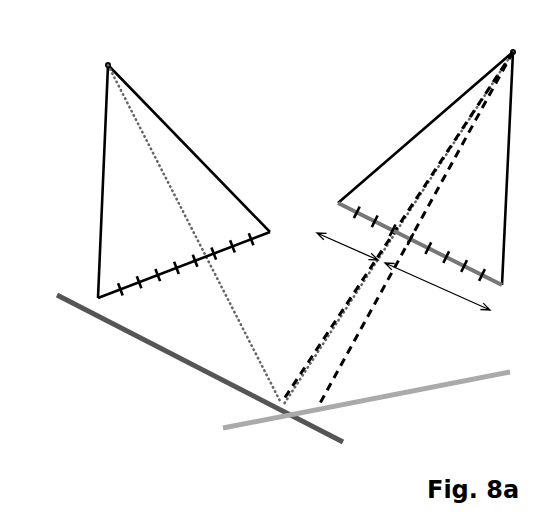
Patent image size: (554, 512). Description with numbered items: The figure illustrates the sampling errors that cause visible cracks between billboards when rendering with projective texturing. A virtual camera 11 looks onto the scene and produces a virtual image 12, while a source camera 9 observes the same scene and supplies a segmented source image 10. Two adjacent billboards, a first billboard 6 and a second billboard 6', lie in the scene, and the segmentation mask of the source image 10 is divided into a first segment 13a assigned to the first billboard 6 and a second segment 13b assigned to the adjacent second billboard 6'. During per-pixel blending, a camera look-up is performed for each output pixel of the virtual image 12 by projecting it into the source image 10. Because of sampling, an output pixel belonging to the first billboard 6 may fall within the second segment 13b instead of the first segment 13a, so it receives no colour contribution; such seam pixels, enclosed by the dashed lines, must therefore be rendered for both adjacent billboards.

The virtual camera 11 is at (104, 65).
The virtual image 12 is at (177, 272).
The source camera 9 is at (510, 52).
The source image 10 is at (466, 250).
The first segment 13a is at (347, 259).
The second segment 13b is at (437, 292).
The first billboard 6 is at (200, 368).
The second billboard 6' is at (366, 414).